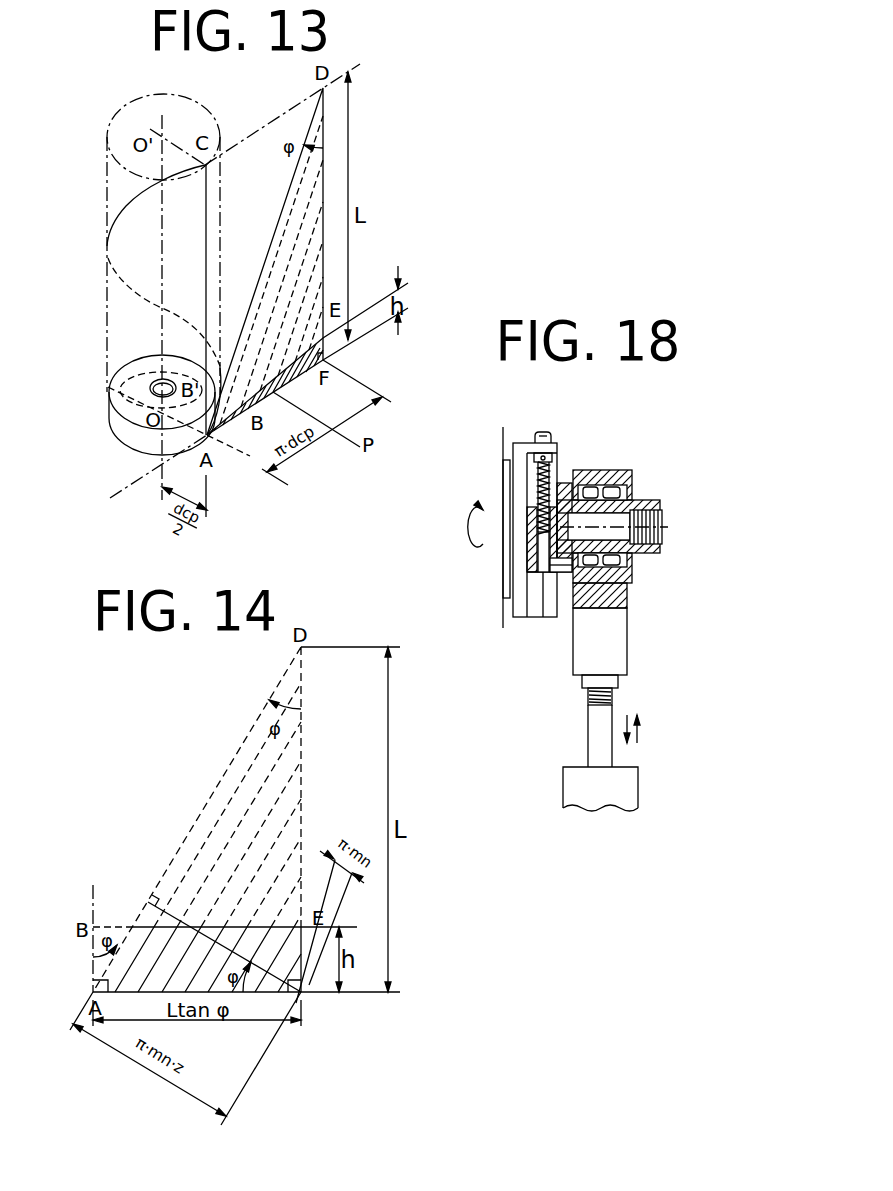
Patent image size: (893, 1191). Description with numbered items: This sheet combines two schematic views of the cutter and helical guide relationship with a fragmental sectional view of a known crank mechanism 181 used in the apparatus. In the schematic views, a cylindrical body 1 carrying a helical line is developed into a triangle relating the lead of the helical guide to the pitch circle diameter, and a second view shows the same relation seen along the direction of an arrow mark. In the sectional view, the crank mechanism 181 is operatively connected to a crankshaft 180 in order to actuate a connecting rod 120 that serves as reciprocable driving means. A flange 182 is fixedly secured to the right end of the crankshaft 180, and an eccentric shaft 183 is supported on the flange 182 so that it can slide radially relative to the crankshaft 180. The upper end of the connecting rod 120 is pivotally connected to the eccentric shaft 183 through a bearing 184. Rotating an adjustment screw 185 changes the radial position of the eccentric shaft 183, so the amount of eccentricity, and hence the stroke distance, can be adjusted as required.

In FIG. 13, the worm blank (workpiece) 1 is at (113, 419).
In FIG. 18, the connecting rod 120 is at (620, 637).
In FIG. 18, the crankshaft 180 is at (512, 487).
In FIG. 18, the crank mechanism 181 is at (603, 452).
In FIG. 18, the flange 182 is at (520, 445).
In FIG. 18, the eccentric shaft 183 is at (613, 523).
In FIG. 18, the bearing 184 is at (613, 480).
In FIG. 18, the adjustment screw 185 is at (545, 430).